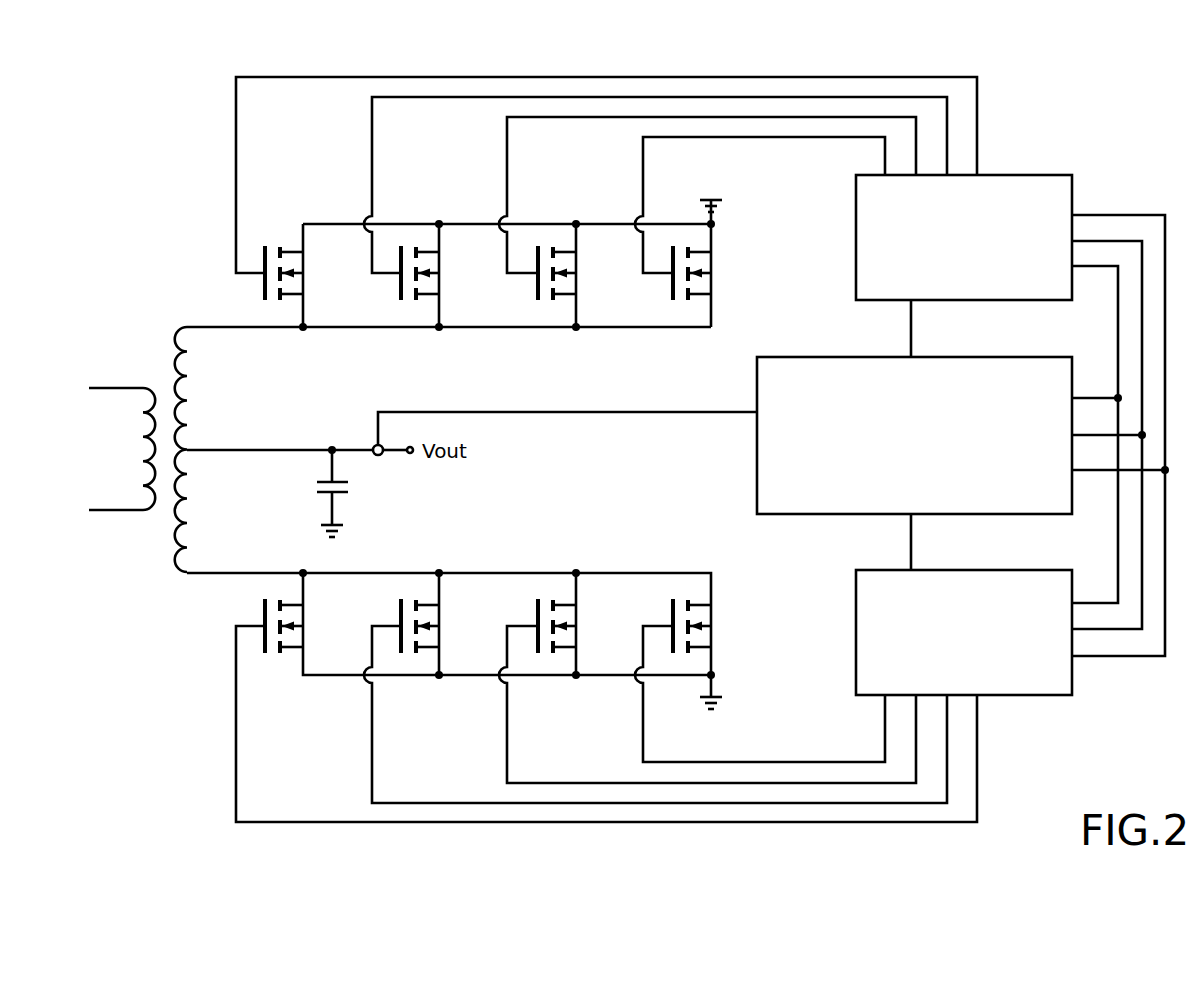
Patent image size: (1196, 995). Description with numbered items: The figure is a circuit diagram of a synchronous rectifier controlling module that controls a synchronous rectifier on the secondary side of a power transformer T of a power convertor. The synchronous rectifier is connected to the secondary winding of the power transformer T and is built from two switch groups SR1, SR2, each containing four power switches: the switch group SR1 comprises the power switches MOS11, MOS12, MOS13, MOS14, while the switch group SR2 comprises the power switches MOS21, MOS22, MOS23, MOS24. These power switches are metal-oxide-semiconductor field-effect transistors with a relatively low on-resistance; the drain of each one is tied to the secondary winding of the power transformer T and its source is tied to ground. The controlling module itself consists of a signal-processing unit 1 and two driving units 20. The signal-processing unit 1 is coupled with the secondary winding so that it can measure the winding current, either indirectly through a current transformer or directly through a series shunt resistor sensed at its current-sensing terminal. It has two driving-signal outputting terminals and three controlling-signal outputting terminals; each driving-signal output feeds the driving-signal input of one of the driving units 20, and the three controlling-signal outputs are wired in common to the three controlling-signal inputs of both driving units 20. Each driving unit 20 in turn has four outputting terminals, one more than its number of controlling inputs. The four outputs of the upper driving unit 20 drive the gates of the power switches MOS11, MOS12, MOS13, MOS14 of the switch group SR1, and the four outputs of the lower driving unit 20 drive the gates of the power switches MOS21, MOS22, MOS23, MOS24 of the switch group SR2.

The signal-processing unit 1 is at (789, 493).
The driving unit 20 is at (1027, 183).
The power transformer T is at (146, 358).
The switch group SR1 is at (424, 240).
The switch group SR2 is at (420, 663).
The power switch MOS11 is at (267, 237).
The power switch MOS12 is at (405, 237).
The power switch MOS13 is at (543, 243).
The power switch MOS14 is at (678, 243).
The power switch MOS21 is at (270, 663).
The power switch MOS22 is at (410, 658).
The power switch MOS23 is at (543, 655).
The power switch MOS24 is at (682, 655).